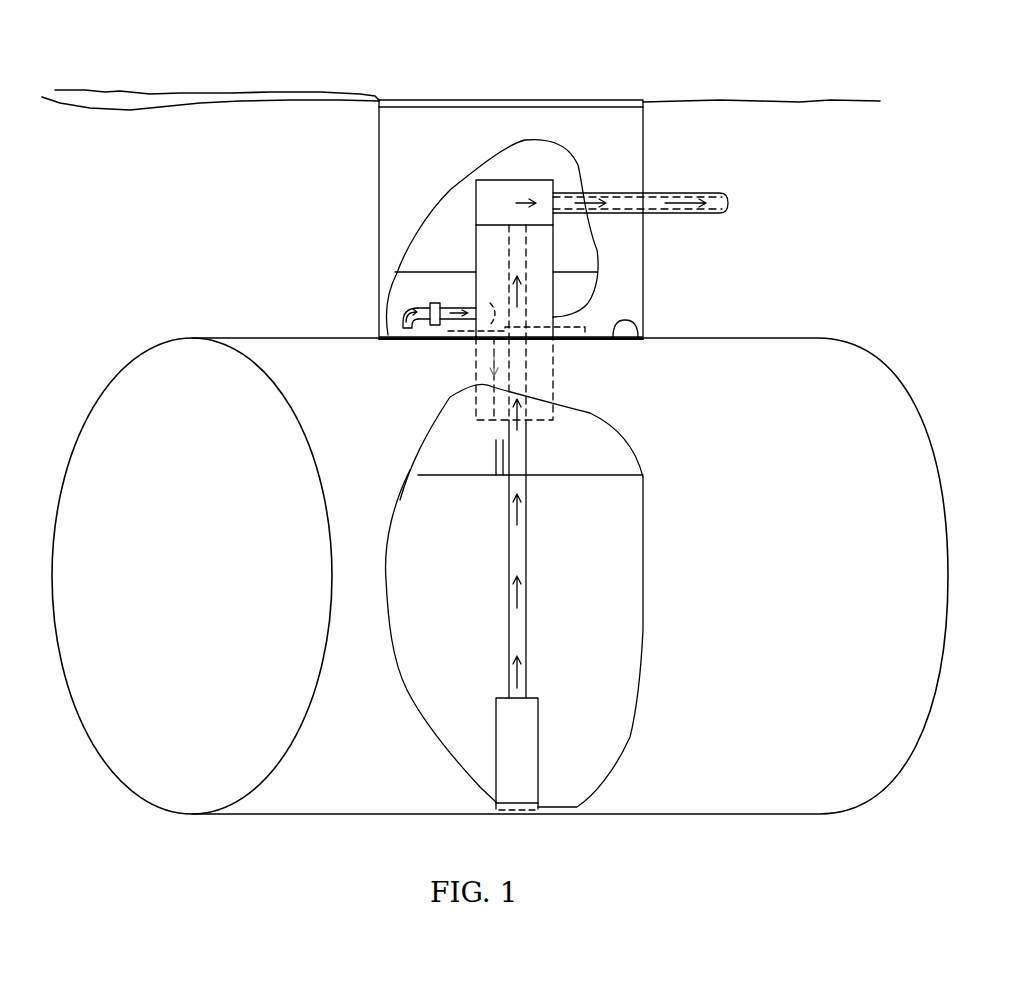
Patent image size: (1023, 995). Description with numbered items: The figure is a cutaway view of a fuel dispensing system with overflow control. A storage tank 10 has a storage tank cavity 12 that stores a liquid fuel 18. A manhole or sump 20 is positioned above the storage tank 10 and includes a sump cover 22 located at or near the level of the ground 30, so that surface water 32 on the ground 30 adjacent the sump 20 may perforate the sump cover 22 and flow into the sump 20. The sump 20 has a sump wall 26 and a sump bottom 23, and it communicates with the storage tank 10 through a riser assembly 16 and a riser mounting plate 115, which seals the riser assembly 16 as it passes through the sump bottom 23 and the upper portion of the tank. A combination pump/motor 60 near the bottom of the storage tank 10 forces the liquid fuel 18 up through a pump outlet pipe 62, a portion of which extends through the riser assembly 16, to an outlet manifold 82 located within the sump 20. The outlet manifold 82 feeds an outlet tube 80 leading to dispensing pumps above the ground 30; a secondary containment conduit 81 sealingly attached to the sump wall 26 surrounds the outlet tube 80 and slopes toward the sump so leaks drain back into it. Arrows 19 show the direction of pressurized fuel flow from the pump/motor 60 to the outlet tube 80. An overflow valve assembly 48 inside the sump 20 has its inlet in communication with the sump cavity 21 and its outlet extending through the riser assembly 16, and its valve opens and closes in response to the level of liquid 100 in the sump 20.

The storage tank 10 is at (928, 441).
The storage tank cavity 12 is at (603, 442).
The riser assembly 16 is at (552, 362).
The liquid fuel 18 is at (442, 475).
The arrows 19 is at (516, 200).
The sump 20 is at (543, 181).
The sump cavity 21 is at (445, 215).
The sump cover 22 is at (596, 100).
The sump bottom 23 is at (633, 332).
The sump wall 26 is at (644, 172).
The ground 30 is at (200, 170).
The surface water 32 is at (132, 98).
The overflow valve assembly 48 is at (412, 297).
The pump/motor 60 is at (530, 753).
The pump outlet pipe 62 is at (526, 557).
The outlet tube 80 is at (563, 205).
The secondary containment conduit 81 is at (706, 191).
The outlet manifold 82 is at (491, 190).
The level of liquid 100 is at (458, 273).
The riser mounting plate 115 is at (535, 323).